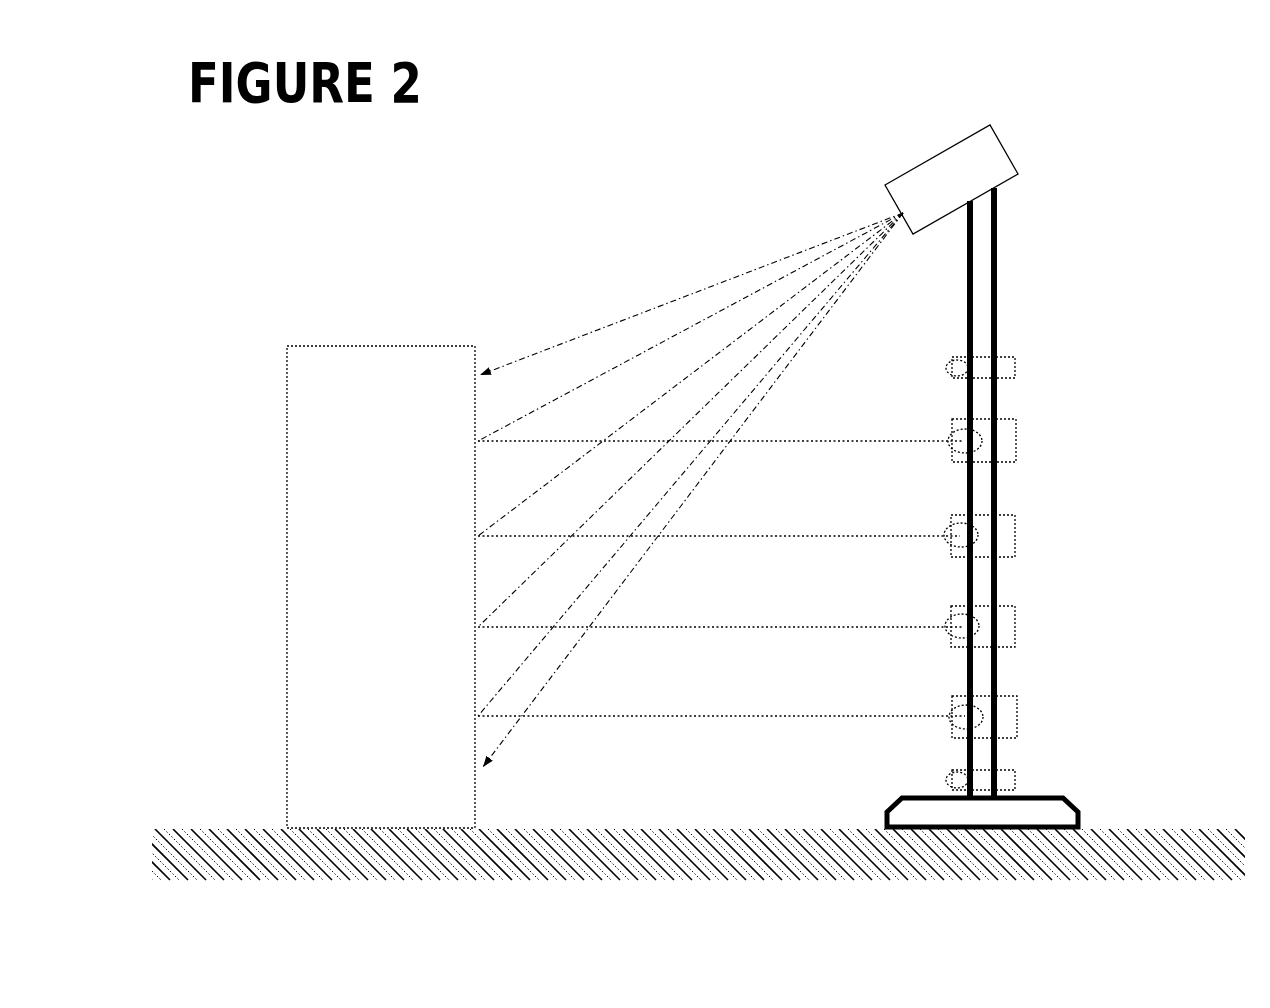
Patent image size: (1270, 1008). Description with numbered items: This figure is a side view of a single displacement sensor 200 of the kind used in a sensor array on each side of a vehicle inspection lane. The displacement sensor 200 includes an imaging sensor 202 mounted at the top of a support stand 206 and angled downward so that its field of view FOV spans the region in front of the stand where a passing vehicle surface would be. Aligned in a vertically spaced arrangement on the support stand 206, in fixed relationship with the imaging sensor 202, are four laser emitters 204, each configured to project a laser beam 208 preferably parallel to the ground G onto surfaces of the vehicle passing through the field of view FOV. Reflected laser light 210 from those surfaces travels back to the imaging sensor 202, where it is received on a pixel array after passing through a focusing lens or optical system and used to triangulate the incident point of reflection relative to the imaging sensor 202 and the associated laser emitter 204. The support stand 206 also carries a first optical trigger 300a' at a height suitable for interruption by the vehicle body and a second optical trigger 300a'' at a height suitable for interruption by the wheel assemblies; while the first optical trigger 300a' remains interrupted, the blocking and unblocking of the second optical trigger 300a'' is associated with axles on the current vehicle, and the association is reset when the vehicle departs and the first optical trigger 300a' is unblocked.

The displacement sensor 200 is at (965, 451).
The imaging sensor 202 is at (938, 150).
The laser emitter 204 is at (1022, 440).
The support stand 206 is at (1002, 315).
The laser beam 208 is at (790, 437).
The reflected laser light 210 is at (697, 310).
The first optical trigger 300a' is at (1068, 333).
The second optical trigger 300a'' is at (1070, 745).
The field of view FOV is at (562, 343).
The ground G is at (235, 842).